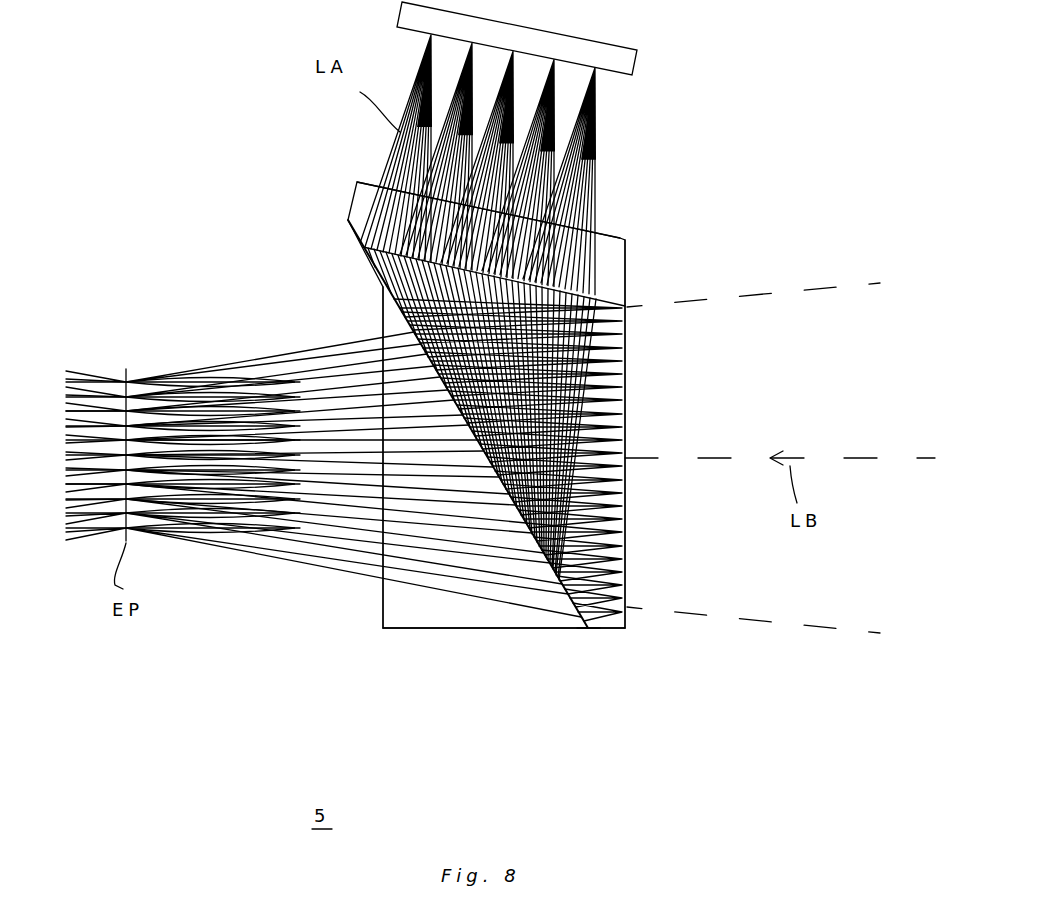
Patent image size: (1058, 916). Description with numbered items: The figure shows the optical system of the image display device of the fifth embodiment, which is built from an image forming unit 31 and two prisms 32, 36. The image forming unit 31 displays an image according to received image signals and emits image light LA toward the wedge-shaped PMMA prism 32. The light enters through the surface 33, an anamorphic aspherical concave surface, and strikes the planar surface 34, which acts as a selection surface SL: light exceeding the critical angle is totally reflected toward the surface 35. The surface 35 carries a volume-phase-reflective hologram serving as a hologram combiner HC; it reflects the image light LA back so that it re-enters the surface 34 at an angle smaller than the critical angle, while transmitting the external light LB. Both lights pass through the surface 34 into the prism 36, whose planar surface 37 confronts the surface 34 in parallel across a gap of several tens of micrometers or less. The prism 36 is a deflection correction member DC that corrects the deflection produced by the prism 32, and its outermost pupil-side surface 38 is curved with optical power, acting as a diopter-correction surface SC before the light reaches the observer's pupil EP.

The image forming unit 31 is at (593, 48).
The prism 32 is at (645, 236).
The surface 33 is at (367, 180).
The surface 34 is at (587, 618).
The surface 35 is at (626, 285).
The prism 36 is at (479, 652).
The planar surface 37 is at (577, 630).
The surface 38 is at (383, 628).